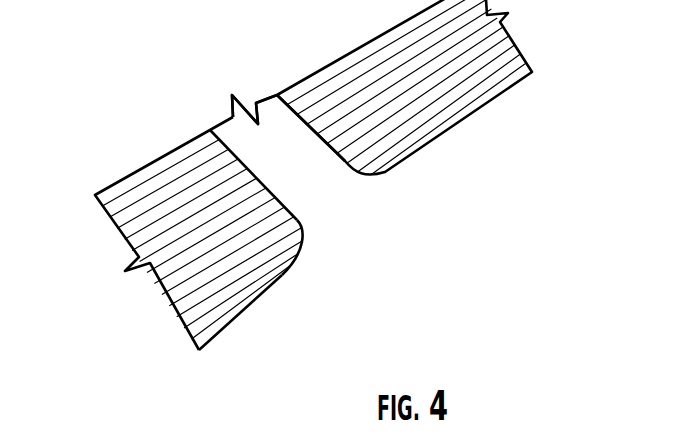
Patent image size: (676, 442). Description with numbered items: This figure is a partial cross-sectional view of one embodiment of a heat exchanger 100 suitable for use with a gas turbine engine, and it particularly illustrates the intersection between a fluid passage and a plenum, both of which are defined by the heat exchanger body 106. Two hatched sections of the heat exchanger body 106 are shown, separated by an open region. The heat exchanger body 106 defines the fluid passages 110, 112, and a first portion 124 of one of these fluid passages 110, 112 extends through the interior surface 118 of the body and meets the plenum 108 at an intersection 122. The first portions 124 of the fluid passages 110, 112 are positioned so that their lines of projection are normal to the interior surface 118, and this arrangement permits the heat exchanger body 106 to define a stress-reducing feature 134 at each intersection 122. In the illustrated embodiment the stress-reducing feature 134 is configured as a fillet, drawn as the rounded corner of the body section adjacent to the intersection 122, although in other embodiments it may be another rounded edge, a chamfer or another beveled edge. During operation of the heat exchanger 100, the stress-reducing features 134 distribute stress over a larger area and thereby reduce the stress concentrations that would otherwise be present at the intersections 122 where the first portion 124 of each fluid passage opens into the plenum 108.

The heat exchanger 100 is at (80, 114).
The heat exchanger body 106 is at (171, 303).
The plenum 108 is at (516, 172).
The fluid passage 110 is at (264, 81).
The fluid passage 112 is at (254, 109).
The interior surface 118 is at (250, 307).
The intersection 122 is at (355, 209).
The first portion 124 is at (302, 165).
The stress-reducing feature 134 is at (302, 243).